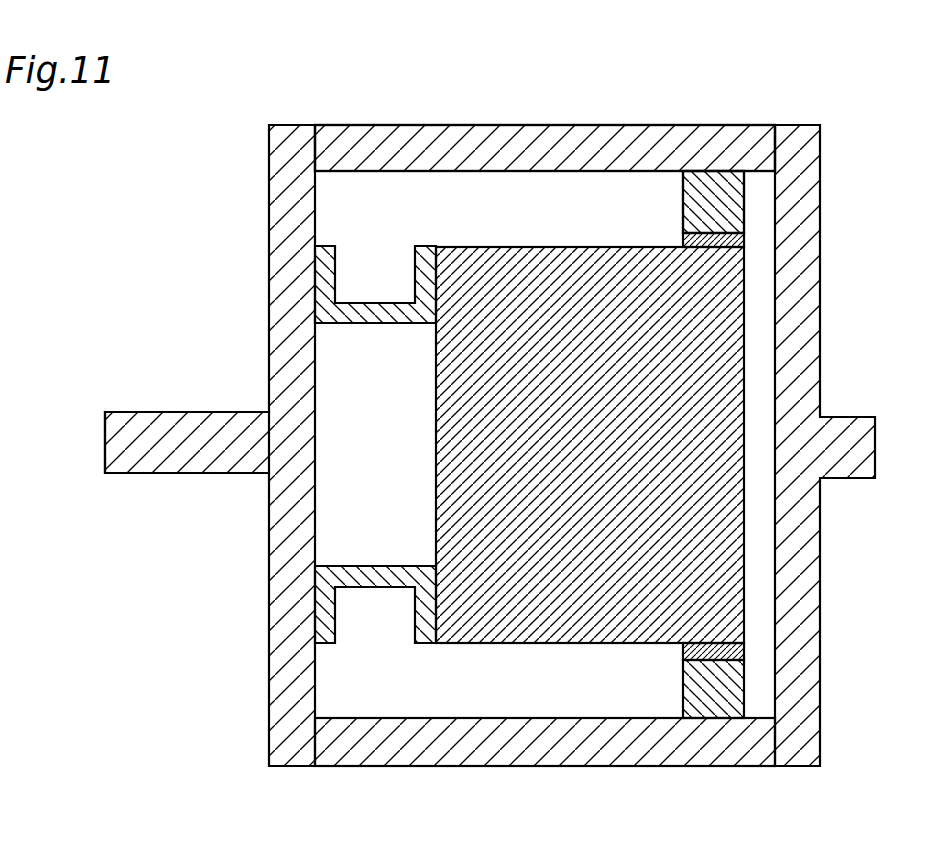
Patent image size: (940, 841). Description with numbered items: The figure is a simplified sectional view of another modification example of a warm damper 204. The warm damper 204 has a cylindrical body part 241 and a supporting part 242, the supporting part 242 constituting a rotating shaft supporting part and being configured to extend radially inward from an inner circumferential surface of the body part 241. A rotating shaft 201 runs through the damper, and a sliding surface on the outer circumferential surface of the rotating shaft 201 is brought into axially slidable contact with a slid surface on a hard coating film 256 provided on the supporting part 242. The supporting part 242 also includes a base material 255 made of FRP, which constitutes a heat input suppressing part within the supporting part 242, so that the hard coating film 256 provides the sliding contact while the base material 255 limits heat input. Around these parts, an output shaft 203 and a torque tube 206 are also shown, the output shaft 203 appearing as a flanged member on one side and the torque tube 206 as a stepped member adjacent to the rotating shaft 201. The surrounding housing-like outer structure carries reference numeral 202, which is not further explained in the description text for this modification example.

The rotating shaft 201 is at (710, 522).
The housing 202 is at (810, 291).
The output shaft 203 is at (283, 268).
The warm damper 204 is at (544, 142).
The torque tube 206 is at (376, 302).
The cylindrical body part 241 is at (462, 142).
The supporting part 242 is at (708, 190).
The base material 255 is at (723, 190).
The hard coating film 256 is at (725, 237).